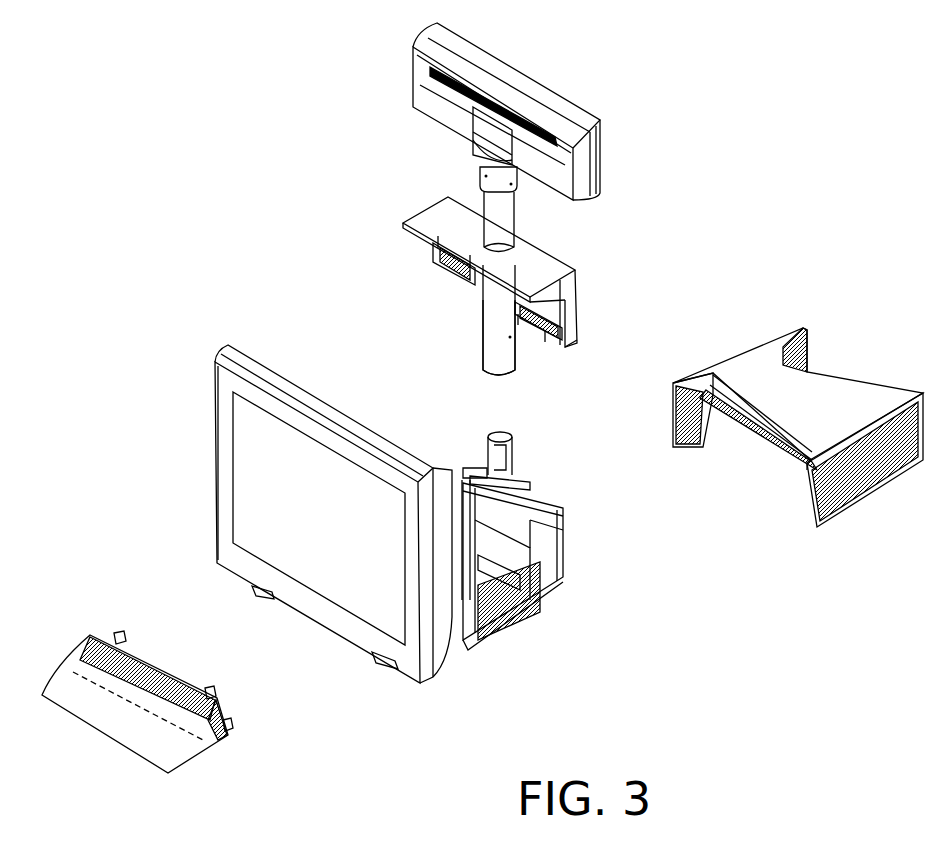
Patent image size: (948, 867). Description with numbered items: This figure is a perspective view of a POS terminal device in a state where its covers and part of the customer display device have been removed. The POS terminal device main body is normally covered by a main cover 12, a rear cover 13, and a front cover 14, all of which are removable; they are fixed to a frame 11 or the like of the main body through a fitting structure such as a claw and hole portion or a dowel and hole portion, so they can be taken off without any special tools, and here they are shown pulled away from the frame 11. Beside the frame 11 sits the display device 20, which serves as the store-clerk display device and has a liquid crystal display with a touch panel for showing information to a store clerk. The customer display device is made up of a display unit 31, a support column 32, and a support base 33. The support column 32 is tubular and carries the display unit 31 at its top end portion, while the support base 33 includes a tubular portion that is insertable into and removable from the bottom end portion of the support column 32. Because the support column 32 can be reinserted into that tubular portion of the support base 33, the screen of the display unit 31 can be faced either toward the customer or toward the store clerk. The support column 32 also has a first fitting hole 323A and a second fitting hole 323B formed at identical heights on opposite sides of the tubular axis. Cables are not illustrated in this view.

The frame 11 is at (560, 525).
The main cover 12 is at (813, 393).
The rear cover 13 is at (573, 308).
The front cover 14 is at (203, 733).
The display device 20 is at (377, 615).
The display unit 31 is at (590, 162).
The support column 32 is at (507, 222).
The first fitting hole 323A is at (517, 340).
The second fitting hole 323B is at (490, 350).
The support base 33 is at (507, 460).